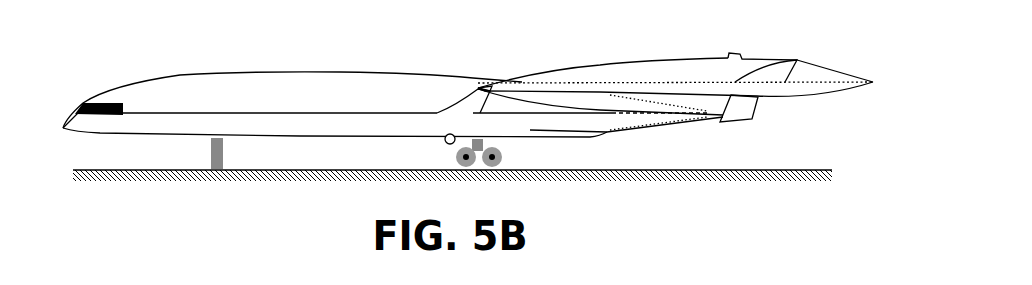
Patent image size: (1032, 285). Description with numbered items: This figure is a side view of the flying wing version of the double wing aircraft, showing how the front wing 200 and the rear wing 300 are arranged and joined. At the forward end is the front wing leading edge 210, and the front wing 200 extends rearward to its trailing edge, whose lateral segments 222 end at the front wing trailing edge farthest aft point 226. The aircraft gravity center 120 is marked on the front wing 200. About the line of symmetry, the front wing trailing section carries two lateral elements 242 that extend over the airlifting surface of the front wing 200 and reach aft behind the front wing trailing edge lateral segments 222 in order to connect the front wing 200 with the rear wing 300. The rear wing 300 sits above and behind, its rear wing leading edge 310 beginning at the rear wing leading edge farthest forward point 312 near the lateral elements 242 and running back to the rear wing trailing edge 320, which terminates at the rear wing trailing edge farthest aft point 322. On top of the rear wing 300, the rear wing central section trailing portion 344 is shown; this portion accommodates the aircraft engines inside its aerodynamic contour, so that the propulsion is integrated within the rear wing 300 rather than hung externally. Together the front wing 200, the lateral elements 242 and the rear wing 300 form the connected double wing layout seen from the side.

The front wing 200 is at (253, 88).
The front wing leading edge 210 is at (140, 117).
The aircraft gravity center 120 is at (450, 110).
The front wing trailing edge lateral segments 222 is at (543, 110).
The front wing trailing edge farthest aft point 226 is at (720, 117).
The front wing trailing section lateral elements 242 is at (510, 82).
The rear wing 300 is at (603, 77).
The rear wing leading edge 310 is at (653, 82).
The rear wing leading edge farthest forward point 312 is at (563, 82).
The rear wing central section trailing portion 344 is at (747, 63).
The rear wing trailing edge 320 is at (820, 82).
The rear wing trailing edge farthest aft point 322 is at (873, 82).